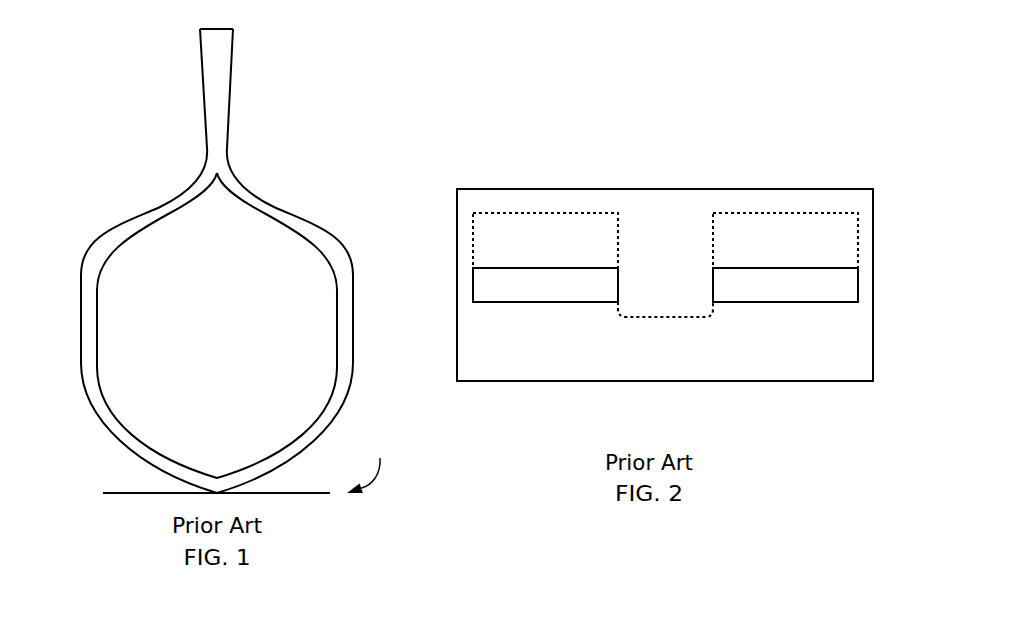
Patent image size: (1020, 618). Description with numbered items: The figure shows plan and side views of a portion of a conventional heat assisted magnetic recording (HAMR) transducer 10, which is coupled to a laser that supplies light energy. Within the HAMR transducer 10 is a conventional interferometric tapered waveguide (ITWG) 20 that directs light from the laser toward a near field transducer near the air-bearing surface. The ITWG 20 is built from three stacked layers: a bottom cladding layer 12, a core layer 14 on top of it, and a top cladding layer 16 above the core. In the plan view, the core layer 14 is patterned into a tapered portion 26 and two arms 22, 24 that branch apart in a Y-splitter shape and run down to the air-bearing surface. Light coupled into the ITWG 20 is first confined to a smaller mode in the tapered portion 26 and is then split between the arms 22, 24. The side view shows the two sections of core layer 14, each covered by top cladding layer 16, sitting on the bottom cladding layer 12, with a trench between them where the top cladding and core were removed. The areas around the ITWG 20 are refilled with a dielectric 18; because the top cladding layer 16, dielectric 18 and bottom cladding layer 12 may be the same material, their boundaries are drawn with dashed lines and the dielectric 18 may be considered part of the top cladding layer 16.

In FIG. 1, the HAMR transducer 10 is at (203, 22).
In FIG. 2, the HAMR transducer 10 is at (647, 136).
In FIG. 2, the bottom cladding layer 12 is at (568, 382).
In FIG. 2, the core layer 14 is at (449, 291).
In FIG. 2, the top cladding layer 16 is at (448, 252).
In FIG. 1, the dielectric 18 is at (162, 399).
In FIG. 2, the dielectric 18 is at (635, 229).
In FIG. 1, the interferometric tapered waveguide 20 is at (288, 153).
In FIG. 1, the arm 22 is at (293, 212).
In FIG. 2, the arm 22 is at (778, 328).
In FIG. 1, the arm 24 is at (152, 206).
In FIG. 2, the arm 24 is at (543, 327).
In FIG. 1, the tapered portion 26 is at (204, 93).